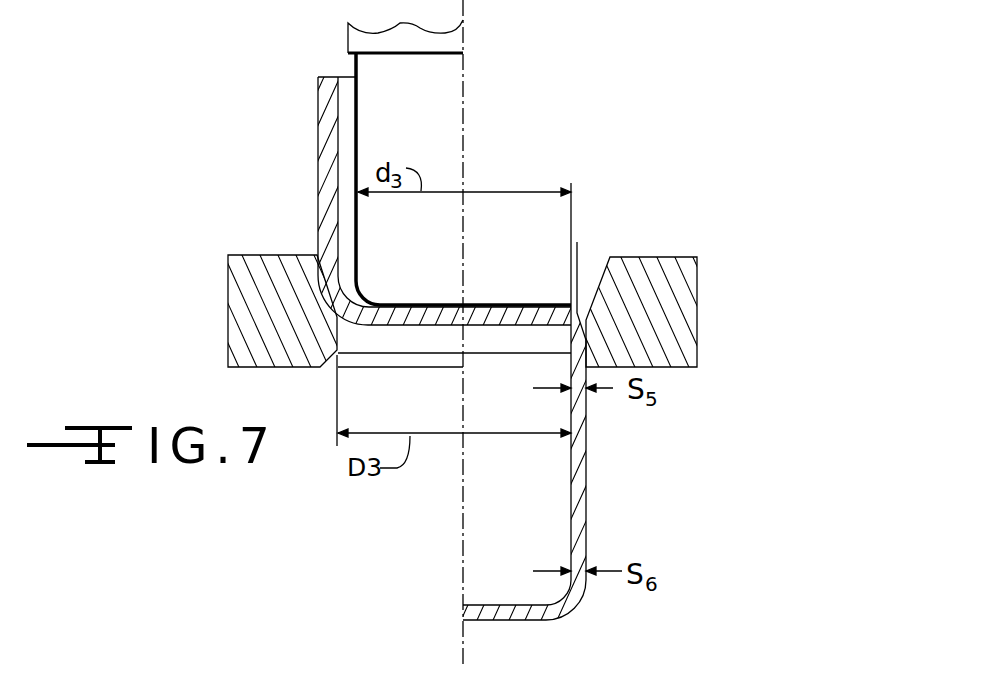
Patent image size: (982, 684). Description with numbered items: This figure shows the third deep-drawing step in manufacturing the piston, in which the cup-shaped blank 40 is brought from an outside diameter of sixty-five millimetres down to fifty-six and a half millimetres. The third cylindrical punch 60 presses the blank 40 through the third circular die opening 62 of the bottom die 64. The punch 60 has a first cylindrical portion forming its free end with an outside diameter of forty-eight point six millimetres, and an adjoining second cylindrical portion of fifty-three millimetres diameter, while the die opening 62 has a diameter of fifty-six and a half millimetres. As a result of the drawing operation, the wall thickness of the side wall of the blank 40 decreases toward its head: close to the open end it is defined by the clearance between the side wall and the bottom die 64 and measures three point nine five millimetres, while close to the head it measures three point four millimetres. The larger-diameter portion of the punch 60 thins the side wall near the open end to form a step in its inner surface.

The cup-shaped blank 40 is at (585, 468).
The third cylindrical punch 60 is at (502, 273).
The third circular die opening 62 is at (416, 354).
The bottom die 64 is at (700, 288).